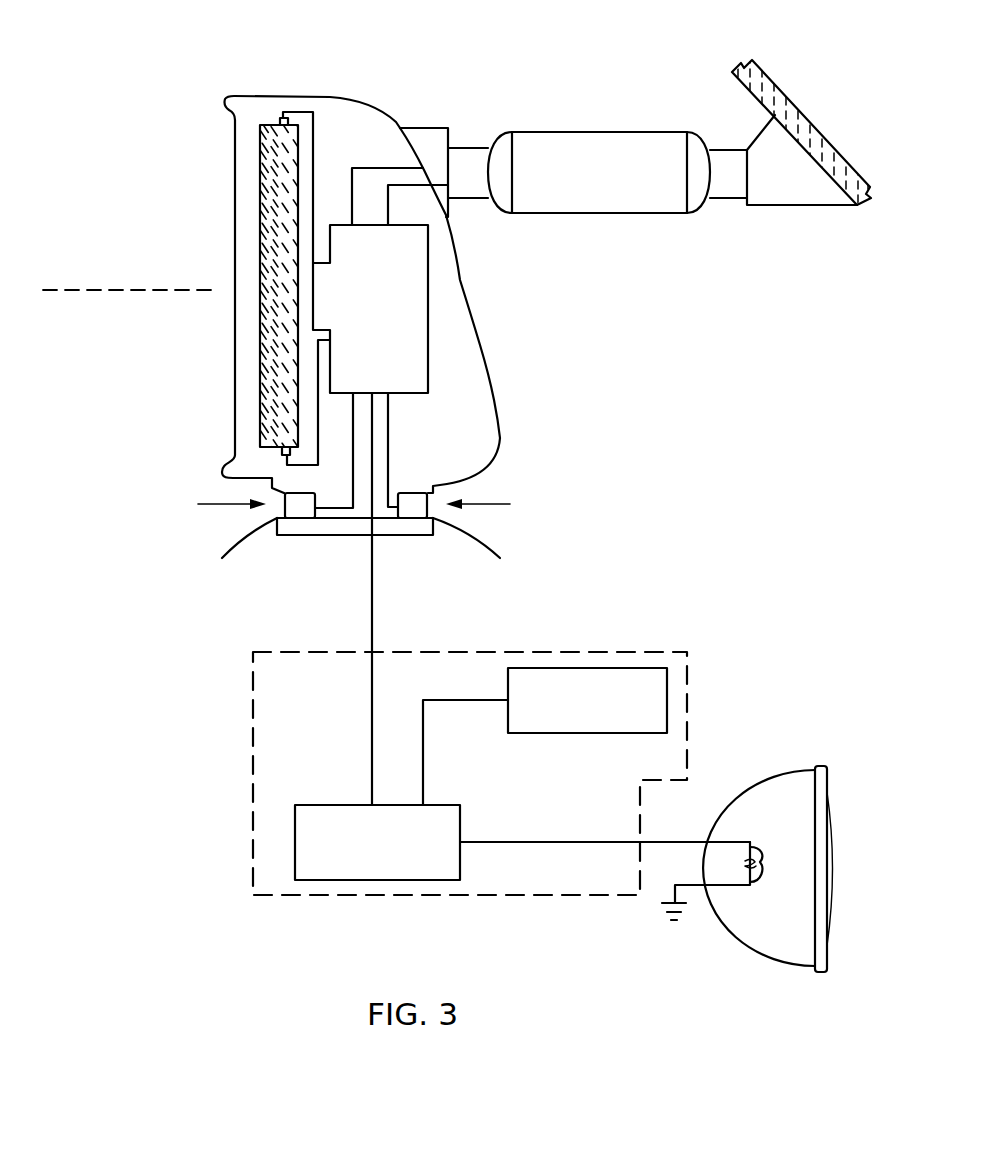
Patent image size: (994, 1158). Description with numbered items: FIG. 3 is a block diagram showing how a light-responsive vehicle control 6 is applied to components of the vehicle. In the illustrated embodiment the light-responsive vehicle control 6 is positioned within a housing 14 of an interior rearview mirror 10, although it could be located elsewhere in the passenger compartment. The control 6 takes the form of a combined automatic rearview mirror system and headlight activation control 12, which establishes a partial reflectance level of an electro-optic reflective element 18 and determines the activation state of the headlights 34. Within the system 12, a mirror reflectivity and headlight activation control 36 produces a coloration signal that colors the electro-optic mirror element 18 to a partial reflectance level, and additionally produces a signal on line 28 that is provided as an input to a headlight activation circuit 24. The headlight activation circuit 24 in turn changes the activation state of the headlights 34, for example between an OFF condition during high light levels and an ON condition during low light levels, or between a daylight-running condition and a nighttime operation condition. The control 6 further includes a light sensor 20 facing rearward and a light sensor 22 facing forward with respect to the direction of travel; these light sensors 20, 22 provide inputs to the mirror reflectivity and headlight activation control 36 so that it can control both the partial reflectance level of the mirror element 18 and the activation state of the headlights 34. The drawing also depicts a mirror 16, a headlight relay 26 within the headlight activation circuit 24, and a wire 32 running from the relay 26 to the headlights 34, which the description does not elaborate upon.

The light-responsive vehicle control 6 is at (233, 37).
The interior rearview mirror 10 is at (482, 349).
The combined automatic rearview mirror system and headlight activation control 12 is at (454, 614).
The housing 14 is at (343, 106).
The mirror 16 is at (772, 78).
The electro-optic reflective element 18 is at (260, 183).
The light sensor 20 is at (283, 512).
The light sensor 22 is at (427, 512).
The headlight activation circuit 24 is at (253, 741).
The headlight relay 26 is at (460, 863).
The line 28 is at (372, 580).
The relay output wire 32 is at (523, 842).
The headlights 34 is at (758, 947).
The mirror reflectivity and headlight activation control 36 is at (428, 273).